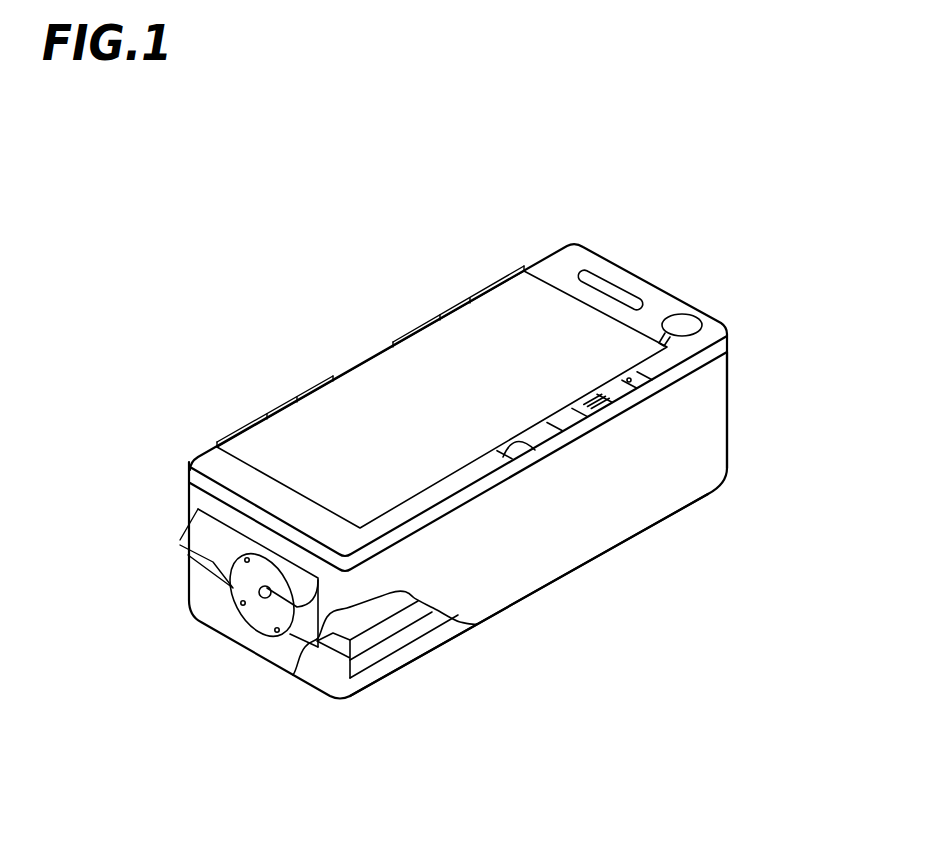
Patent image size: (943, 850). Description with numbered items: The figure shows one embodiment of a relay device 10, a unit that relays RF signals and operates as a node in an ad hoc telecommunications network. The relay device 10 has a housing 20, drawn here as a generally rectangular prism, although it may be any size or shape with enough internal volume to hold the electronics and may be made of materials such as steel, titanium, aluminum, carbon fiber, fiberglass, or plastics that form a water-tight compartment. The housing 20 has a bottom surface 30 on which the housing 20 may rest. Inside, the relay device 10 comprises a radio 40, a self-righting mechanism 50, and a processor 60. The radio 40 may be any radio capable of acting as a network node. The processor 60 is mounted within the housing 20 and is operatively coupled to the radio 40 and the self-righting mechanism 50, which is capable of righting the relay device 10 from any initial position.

The relay device 10 is at (270, 232).
The housing 20 is at (633, 493).
The bottom surface 30 is at (568, 577).
The radio 40 is at (335, 642).
The self-righting mechanism 50 is at (273, 443).
The processor 60 is at (388, 648).